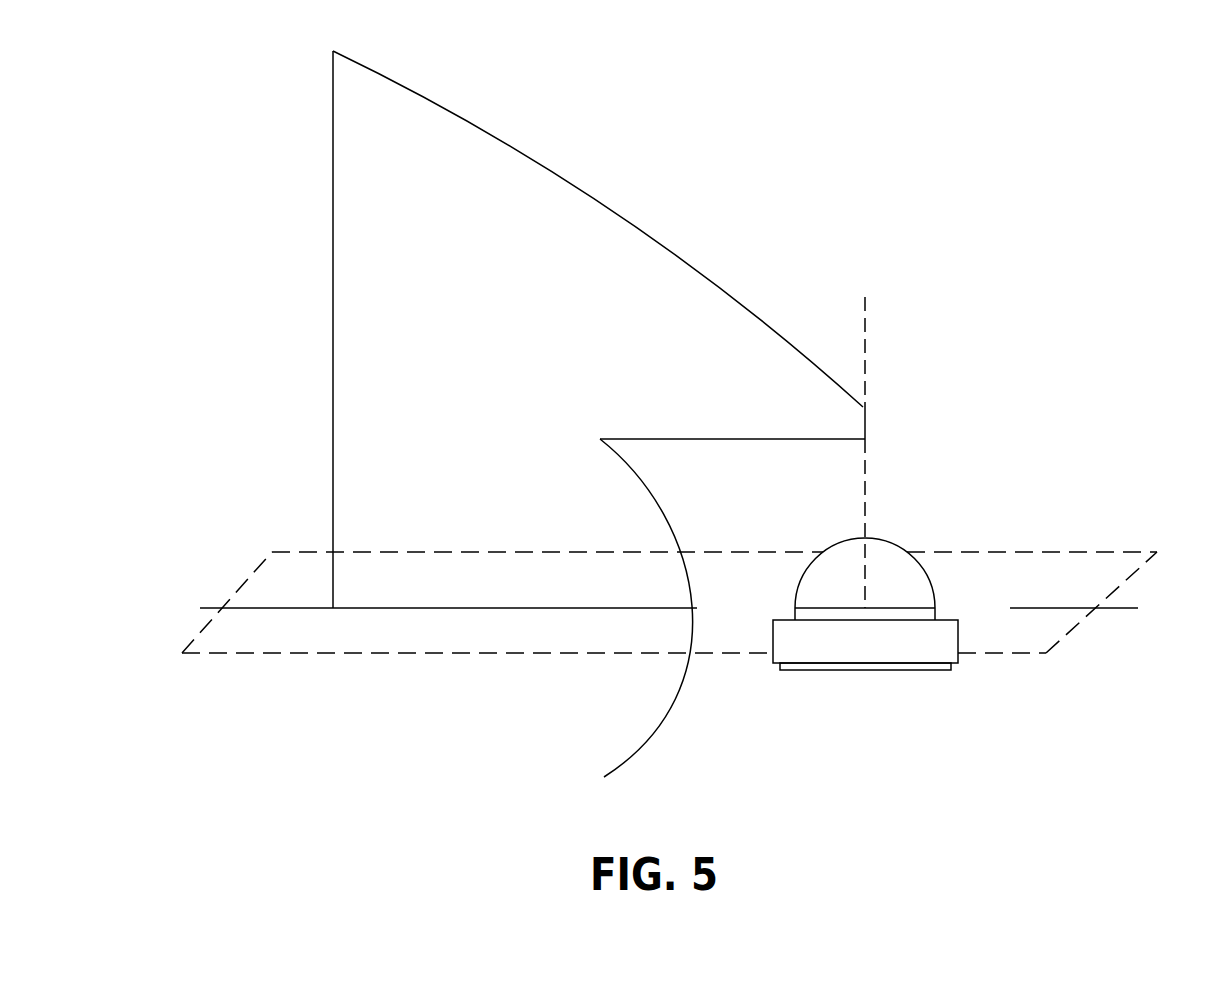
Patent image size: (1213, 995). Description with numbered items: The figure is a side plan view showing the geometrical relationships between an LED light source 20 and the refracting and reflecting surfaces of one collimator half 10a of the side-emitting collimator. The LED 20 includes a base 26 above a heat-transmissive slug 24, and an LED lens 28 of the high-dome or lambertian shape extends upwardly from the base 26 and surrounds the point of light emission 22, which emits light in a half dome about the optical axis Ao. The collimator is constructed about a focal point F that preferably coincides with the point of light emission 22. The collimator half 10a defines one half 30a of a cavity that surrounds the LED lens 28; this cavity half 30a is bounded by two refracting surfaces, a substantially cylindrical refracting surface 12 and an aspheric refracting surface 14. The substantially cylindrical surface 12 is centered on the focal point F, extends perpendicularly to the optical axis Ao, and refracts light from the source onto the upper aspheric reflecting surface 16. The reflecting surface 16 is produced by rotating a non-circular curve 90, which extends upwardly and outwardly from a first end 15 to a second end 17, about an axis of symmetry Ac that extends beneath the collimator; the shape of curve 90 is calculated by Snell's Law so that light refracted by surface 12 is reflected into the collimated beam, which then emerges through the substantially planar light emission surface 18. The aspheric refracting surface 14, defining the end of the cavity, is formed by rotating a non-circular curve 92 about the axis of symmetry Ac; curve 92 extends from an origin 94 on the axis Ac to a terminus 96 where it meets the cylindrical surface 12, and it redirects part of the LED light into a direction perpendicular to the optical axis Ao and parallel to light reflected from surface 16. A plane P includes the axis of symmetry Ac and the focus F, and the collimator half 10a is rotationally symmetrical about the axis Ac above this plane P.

The collimator half 10a is at (305, 190).
The substantially cylindrical refracting surface 12 is at (702, 441).
The aspheric refracting surface 14 is at (648, 497).
The first end 15 is at (865, 407).
The upper aspheric reflecting surface 16 is at (587, 194).
The second end 17 is at (333, 51).
The light emission surface 18 is at (333, 328).
The LED light source 20 is at (900, 612).
The point of light emission 22 is at (865, 608).
The heat-transmissive slug 24 is at (878, 670).
The base 26 is at (945, 637).
The LED lens 28 is at (923, 601).
The cavity half 30a is at (724, 487).
The non-circular curve 90 is at (723, 290).
The non-circular curve 92 is at (682, 552).
The origin 94 is at (697, 610).
The terminus 96 is at (600, 437).
The optical axis Ao is at (865, 322).
The axis of symmetry Ac is at (258, 610).
The plane P is at (278, 574).
The focal point F is at (865, 608).